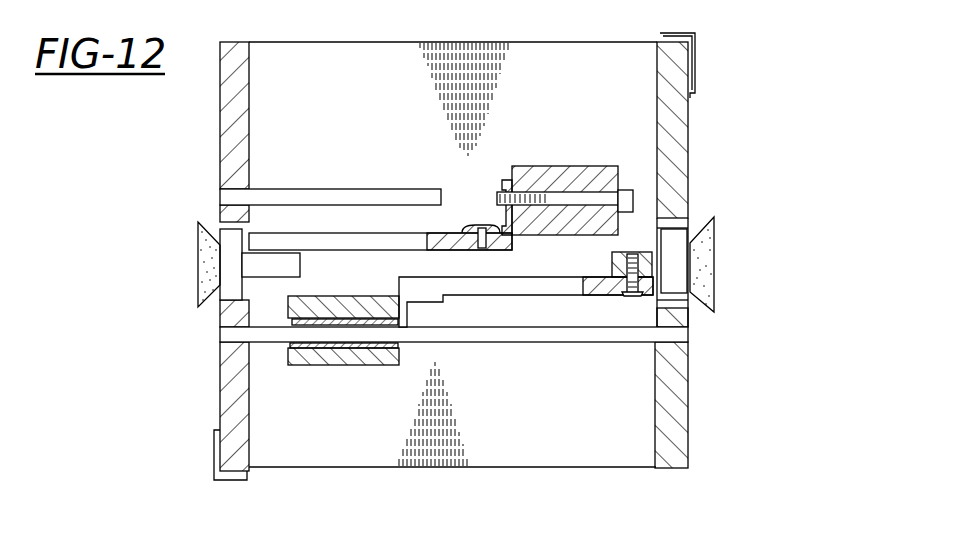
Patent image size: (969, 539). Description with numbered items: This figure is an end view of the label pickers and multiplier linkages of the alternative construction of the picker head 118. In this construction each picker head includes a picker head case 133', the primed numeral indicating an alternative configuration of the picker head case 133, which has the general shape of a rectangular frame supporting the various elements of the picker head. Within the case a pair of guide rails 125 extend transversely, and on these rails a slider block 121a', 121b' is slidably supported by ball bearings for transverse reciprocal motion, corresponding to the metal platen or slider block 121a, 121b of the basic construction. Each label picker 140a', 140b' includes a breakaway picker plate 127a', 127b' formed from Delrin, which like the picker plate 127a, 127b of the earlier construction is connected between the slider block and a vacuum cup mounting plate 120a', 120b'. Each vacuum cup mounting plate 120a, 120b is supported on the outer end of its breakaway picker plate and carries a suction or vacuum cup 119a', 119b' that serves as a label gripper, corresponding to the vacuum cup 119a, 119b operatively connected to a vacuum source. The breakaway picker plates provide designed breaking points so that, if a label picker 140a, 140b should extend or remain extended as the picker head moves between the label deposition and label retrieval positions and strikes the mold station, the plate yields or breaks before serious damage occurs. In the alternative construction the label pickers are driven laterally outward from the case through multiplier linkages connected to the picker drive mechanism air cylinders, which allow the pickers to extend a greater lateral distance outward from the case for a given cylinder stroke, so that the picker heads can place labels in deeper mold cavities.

The picker head 118 is at (718, 27).
The picker head case 133' is at (394, 261).
The guide rails 125 is at (293, 188).
The breakaway picker plate 127a' is at (380, 190).
The breakaway picker plate 127b' is at (586, 329).
The slider block 121a' is at (487, 117).
The slider block 121b' is at (343, 375).
The vacuum cup mounting plate 120a' is at (735, 227).
The vacuum cup mounting plate 120b' is at (217, 311).
The vacuum cup 119a' is at (767, 264).
The vacuum cup 119b' is at (137, 284).
The label picker 140a' is at (780, 293).
The label picker 140b' is at (126, 249).
The picker head case 133 is at (394, 261).
The breakaway picker plate 127a is at (380, 190).
The breakaway picker plate 127b is at (586, 329).
The slider block 121a is at (487, 117).
The slider block 121b is at (343, 375).
The vacuum cup mounting plate 120a is at (735, 227).
The vacuum cup mounting plate 120b is at (217, 311).
The vacuum cup 119a is at (767, 264).
The vacuum cup 119b is at (137, 284).
The label picker 140a is at (780, 293).
The label picker 140b is at (126, 249).